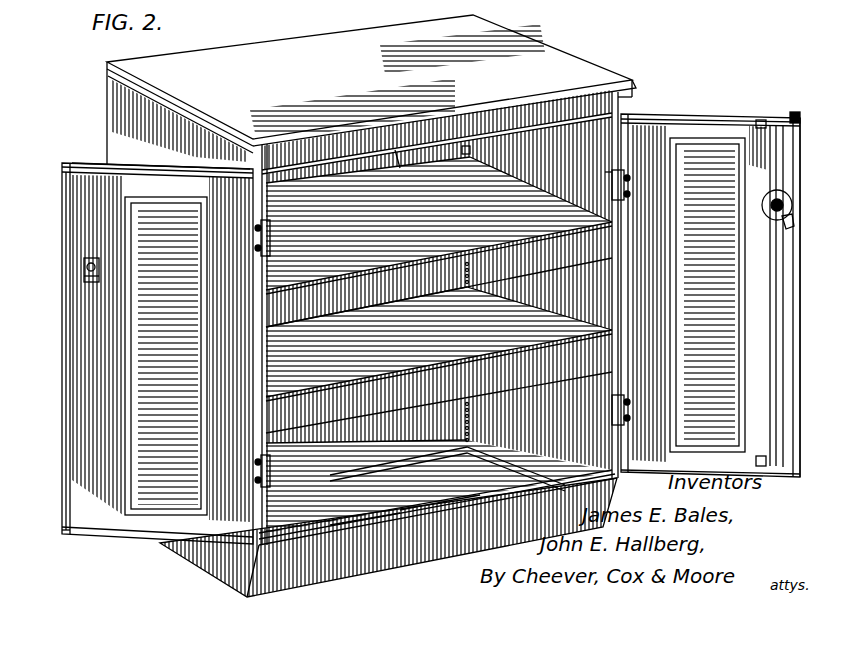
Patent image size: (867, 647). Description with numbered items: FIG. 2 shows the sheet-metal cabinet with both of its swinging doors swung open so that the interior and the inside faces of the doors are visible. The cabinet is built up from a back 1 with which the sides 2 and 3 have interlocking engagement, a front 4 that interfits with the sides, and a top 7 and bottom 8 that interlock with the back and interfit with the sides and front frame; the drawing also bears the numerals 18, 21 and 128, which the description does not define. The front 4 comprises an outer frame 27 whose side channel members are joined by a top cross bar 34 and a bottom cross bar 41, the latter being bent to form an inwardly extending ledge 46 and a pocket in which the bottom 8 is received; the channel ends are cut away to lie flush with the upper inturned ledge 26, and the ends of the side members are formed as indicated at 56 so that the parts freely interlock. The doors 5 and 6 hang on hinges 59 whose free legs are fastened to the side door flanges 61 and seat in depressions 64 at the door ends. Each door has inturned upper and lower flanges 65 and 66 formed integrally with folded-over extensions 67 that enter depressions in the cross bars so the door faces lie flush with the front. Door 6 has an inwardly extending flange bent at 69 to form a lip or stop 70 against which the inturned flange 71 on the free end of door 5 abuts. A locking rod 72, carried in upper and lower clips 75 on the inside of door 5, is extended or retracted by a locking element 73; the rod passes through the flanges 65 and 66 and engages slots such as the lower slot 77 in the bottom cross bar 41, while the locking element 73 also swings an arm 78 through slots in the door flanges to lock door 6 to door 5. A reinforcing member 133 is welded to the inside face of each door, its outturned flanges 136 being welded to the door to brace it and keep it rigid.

The back 1 is at (463, 152).
The side 2 is at (563, 192).
The side 3 is at (118, 113).
The front 4 is at (635, 98).
The door 5 is at (722, 117).
The door 6 is at (62, 288).
The top 7 is at (556, 62).
The bottom 8 is at (401, 466).
The top plate 18 is at (369, 71).
The bottom shelf 21 is at (356, 456).
The upper inturned flange or ledge 26 is at (596, 282).
The outer frame 27 is at (456, 120).
The top cross bar 34 is at (400, 155).
The bottom cross bar 41 is at (388, 537).
The inwardly extending ledge 46 is at (376, 523).
The formed ends of side members 56 is at (612, 178).
The hinge 59 is at (270, 233).
The side door flange 61 is at (268, 357).
The depression 64 is at (262, 262).
The upper flange 65 is at (140, 170).
The lower flange 66 is at (64, 530).
The folded-over extension 67 is at (80, 163).
The bend 69 is at (62, 360).
The lip or stop 70 is at (62, 425).
The inturned flange 71 is at (802, 136).
The locking rod 72 is at (776, 298).
The locking element 73 is at (762, 205).
The clip 75 is at (759, 119).
The lower recess or slot 77 is at (438, 503).
The arm 78 is at (782, 222).
The shelf adjustment holes 128 is at (466, 285).
The reinforcing member 133 is at (205, 398).
The outturned flange 136 is at (207, 445).